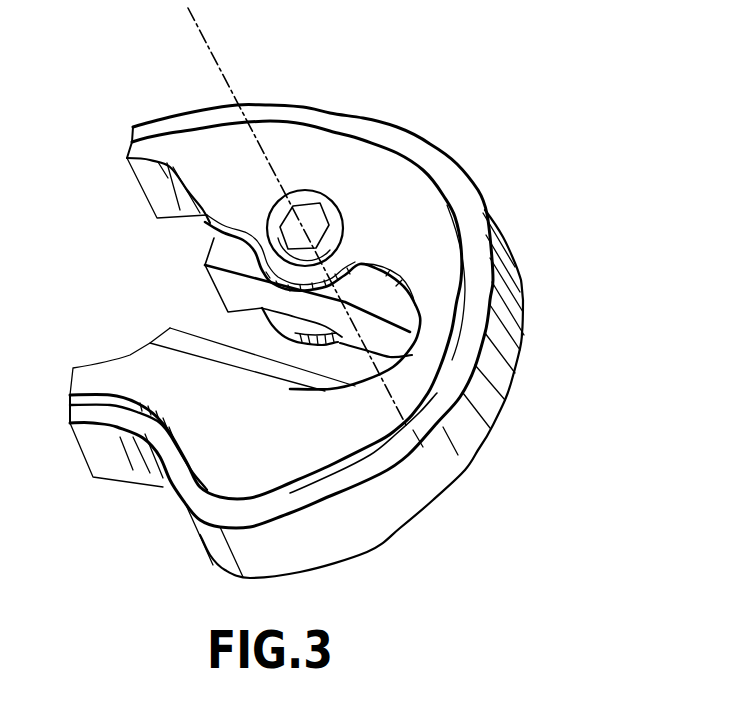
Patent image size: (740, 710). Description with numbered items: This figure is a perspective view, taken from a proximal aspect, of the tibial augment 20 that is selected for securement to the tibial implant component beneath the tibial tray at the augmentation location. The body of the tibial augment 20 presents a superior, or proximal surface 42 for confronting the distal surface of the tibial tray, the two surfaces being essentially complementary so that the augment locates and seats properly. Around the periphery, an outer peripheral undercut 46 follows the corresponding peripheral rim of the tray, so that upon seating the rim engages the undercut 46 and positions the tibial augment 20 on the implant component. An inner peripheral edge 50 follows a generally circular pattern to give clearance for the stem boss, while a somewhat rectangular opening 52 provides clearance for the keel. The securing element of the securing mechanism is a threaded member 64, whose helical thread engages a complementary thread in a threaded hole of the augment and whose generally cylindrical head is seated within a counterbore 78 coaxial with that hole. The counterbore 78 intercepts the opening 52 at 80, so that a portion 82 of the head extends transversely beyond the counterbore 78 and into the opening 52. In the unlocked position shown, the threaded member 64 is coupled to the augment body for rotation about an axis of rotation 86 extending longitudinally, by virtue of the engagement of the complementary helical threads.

The tibial augment 20 is at (506, 409).
The proximal surface 42 is at (343, 146).
The outer peripheral undercut 46 is at (383, 467).
The inner peripheral edge 50 is at (163, 187).
The opening 52 is at (233, 288).
The threaded member 64 is at (345, 219).
The counterbore 78 is at (285, 369).
The interception 80 is at (262, 320).
The portion of the head 82 is at (298, 334).
The axis of rotation 86 is at (282, 150).